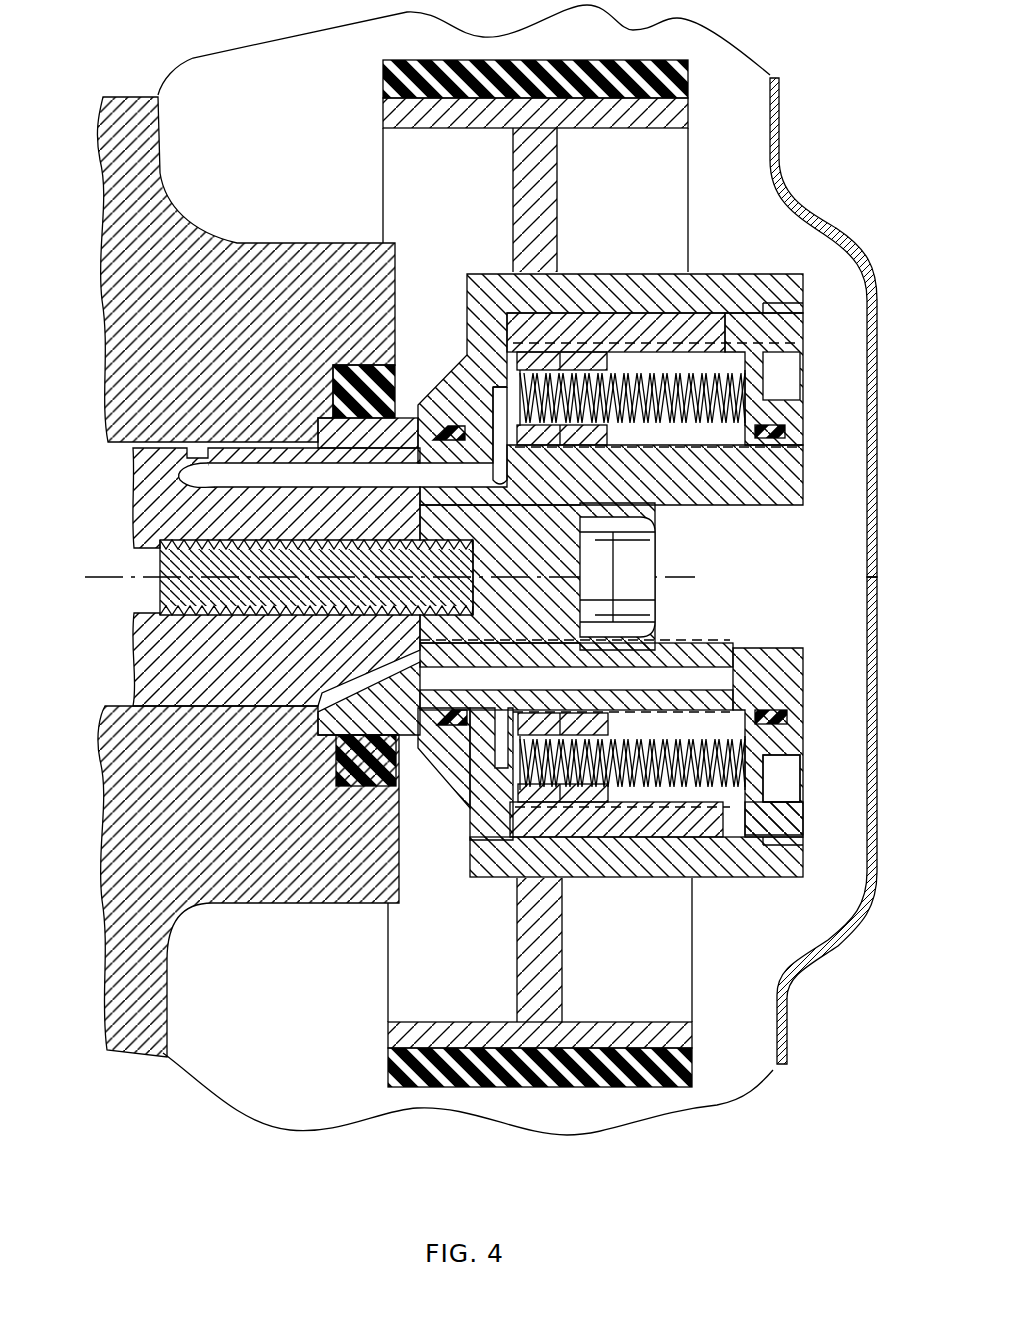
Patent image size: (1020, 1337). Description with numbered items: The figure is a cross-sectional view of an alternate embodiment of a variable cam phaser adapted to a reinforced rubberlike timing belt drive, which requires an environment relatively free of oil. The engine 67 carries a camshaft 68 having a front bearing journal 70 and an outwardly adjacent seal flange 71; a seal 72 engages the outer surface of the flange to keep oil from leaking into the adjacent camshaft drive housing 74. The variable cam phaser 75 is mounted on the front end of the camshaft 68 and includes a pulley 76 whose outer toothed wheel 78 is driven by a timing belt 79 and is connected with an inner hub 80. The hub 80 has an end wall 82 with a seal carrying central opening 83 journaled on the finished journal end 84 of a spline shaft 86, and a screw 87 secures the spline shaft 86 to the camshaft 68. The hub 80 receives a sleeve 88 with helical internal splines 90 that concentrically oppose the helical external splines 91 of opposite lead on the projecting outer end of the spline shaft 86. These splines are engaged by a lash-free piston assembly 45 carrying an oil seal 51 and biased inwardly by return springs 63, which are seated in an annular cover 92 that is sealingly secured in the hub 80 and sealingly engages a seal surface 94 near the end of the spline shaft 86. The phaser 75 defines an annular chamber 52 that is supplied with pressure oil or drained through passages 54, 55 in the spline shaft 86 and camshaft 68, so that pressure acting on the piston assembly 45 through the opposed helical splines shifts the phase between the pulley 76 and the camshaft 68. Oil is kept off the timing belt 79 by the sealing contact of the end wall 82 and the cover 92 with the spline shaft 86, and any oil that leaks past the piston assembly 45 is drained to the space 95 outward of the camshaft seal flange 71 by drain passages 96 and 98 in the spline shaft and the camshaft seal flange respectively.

The piston assembly 45 is at (622, 795).
The oil seal 51 is at (511, 790).
The annular chamber 52 is at (496, 312).
The passage 54 is at (468, 497).
The passage 55 is at (235, 475).
The return springs 63 is at (758, 398).
The engine 67 is at (335, 1036).
The camshaft 68 is at (173, 655).
The front bearing journal 70 is at (257, 440).
The seal flange 71 is at (342, 380).
The seal 72 is at (404, 372).
The camshaft drive housing 74 is at (782, 1008).
The variable cam phaser 75 is at (697, 236).
The pulley 76 is at (805, 453).
The outer toothed wheel 78 is at (693, 1034).
The timing belt 79 is at (582, 1082).
The inner hub 80 is at (805, 270).
The end wall 82 is at (470, 322).
The central opening 83 is at (456, 425).
The journal end 84 is at (448, 737).
The spline shaft 86 is at (783, 480).
The screw 87 is at (170, 567).
The sleeve 88 is at (682, 836).
The helical internal splines 90 is at (764, 792).
The helical external splines 91 is at (724, 717).
The annular cover 92 is at (800, 821).
The seal surface 94 is at (789, 718).
The space 95 is at (327, 738).
The drain passage 96 is at (658, 680).
The drain passage 98 is at (385, 690).